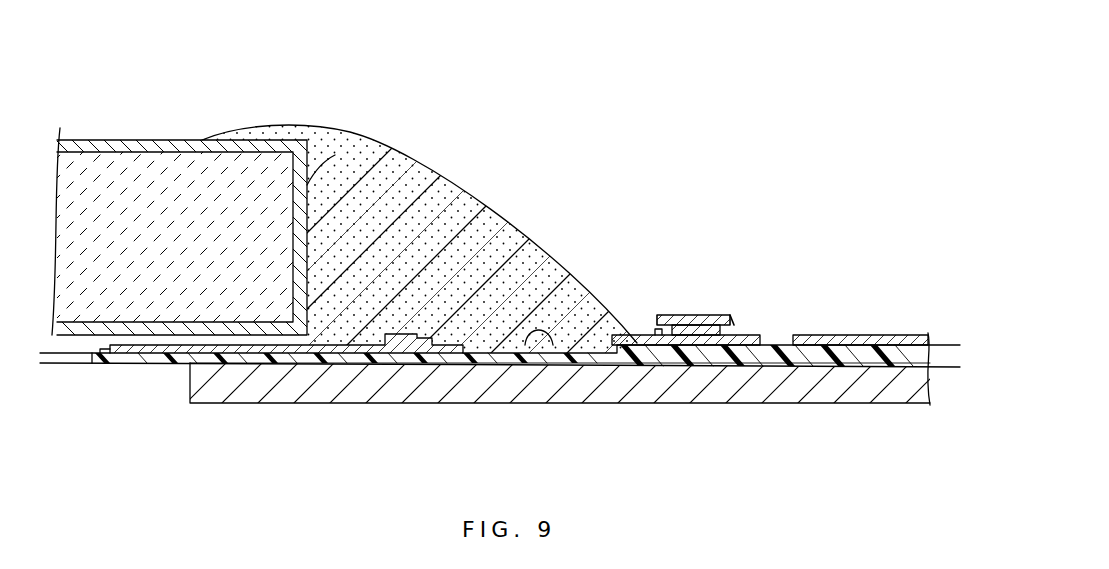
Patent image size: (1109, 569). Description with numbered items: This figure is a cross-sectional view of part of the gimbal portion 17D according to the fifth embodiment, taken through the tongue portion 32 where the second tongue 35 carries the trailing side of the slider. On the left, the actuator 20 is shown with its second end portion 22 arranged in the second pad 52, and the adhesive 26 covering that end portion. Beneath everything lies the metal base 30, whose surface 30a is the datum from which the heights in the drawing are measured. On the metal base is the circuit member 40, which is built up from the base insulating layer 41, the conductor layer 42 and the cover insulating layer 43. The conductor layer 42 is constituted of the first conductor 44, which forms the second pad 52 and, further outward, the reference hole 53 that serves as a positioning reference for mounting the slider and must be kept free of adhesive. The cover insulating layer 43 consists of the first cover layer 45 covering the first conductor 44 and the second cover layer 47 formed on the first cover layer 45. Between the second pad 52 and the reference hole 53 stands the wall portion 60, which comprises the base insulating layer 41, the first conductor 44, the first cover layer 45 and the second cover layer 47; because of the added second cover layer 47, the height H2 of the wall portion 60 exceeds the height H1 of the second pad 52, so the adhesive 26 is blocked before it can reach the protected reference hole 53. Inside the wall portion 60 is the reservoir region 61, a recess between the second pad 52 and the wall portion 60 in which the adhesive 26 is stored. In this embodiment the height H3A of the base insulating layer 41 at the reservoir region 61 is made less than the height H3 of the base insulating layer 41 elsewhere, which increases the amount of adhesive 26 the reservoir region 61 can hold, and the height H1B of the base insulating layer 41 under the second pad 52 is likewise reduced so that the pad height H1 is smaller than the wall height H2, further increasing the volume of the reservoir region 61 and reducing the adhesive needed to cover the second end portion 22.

The gimbal portion 17D is at (748, 116).
The actuator 20 is at (121, 134).
The second end portion 22 is at (313, 172).
The adhesive 26 is at (456, 190).
The metal base 30 is at (872, 397).
The surface of the metal base 30a is at (270, 403).
The tongue portion 32 is at (801, 406).
The second tongue 35 is at (445, 403).
The circuit member 40 is at (776, 322).
The base insulating layer 41 is at (908, 346).
The conductor layer 42 is at (700, 352).
The cover insulating layer 43 is at (737, 317).
The first conductor 44 is at (320, 363).
The first cover layer 45 is at (402, 346).
The second cover layer 47 is at (715, 328).
The second pad 52 is at (225, 355).
The reference hole 53 is at (886, 336).
The wall portion 60 is at (688, 312).
The reservoir region 61 is at (540, 346).
The height of the second pad H1 is at (177, 402).
The height of the base insulating layer in the second pad H1B is at (73, 402).
The height of the wall portion H2 is at (640, 410).
The height of the base insulating layer H3 is at (947, 410).
The height of the base insulating layer at the reservoir region H3A is at (480, 410).